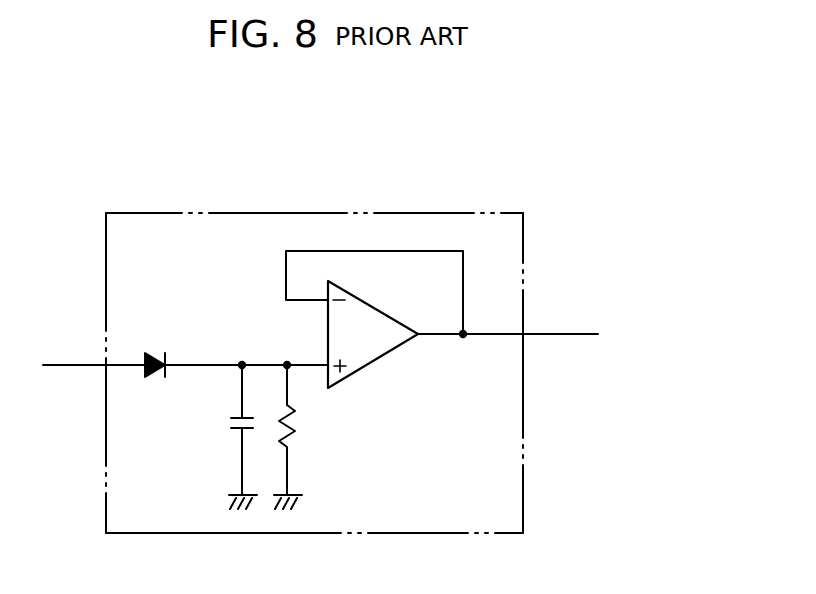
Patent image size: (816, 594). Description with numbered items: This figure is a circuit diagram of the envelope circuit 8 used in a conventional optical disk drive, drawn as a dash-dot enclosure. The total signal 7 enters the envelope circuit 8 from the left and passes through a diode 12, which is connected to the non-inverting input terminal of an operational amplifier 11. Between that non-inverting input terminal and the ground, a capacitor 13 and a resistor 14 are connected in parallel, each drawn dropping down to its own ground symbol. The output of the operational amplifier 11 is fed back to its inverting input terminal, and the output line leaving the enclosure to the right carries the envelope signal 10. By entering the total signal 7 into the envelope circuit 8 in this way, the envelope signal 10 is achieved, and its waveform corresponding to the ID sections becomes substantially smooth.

The total signal 7 is at (92, 366).
The envelope circuit 8 is at (106, 295).
The envelope signal 10 is at (545, 334).
The operational amplifier 11 is at (390, 351).
The diode 12 is at (155, 378).
The capacitor 13 is at (242, 430).
The resistor 14 is at (296, 430).